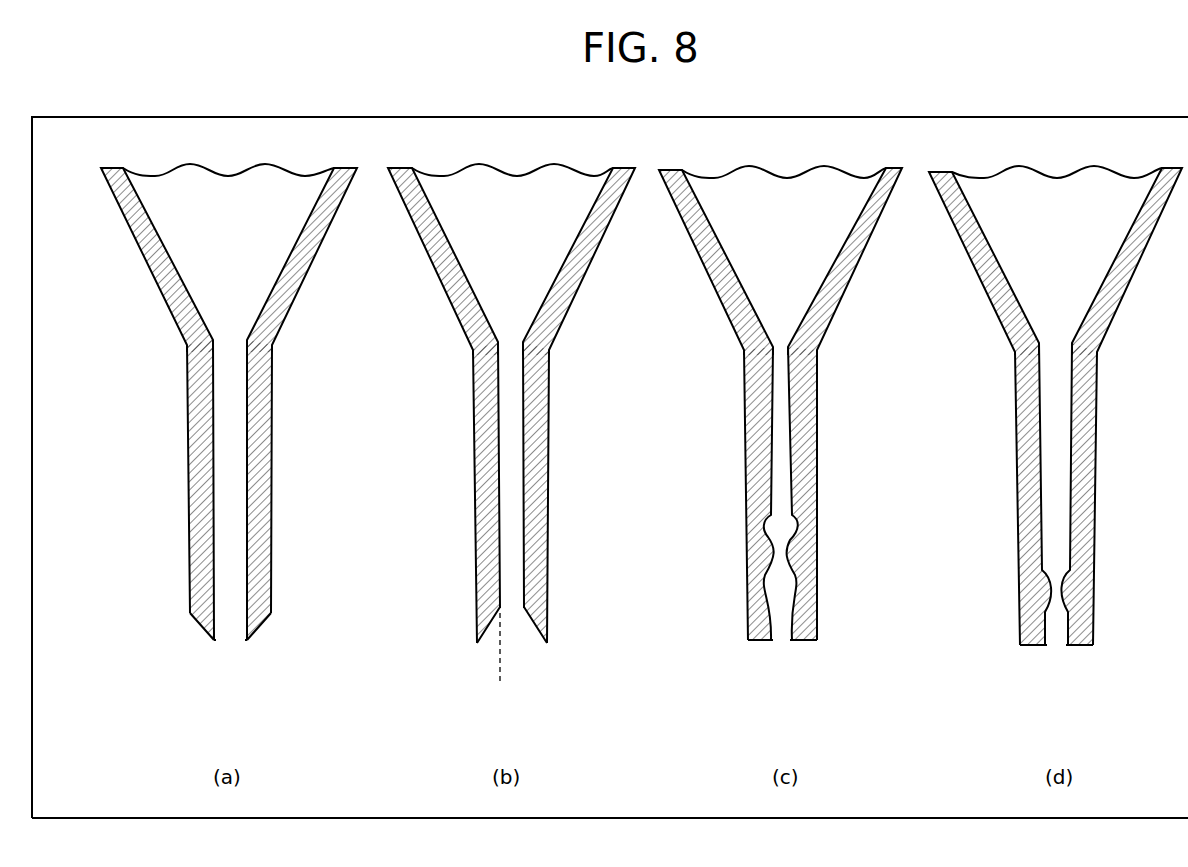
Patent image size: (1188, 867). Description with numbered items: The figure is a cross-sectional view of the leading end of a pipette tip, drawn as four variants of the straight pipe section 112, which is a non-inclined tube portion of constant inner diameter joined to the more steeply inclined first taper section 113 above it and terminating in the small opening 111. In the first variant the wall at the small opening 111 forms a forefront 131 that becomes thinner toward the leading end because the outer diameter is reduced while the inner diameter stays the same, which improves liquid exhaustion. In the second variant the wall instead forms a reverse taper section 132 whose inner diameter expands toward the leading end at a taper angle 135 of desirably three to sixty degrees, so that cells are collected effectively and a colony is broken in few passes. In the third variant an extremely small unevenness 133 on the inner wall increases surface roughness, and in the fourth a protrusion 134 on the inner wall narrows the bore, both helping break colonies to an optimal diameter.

The small opening 111 is at (229, 629).
The straight pipe section 112 is at (172, 552).
The first taper section 113 is at (150, 270).
The forefront 131 is at (258, 620).
The reverse taper section 132 is at (543, 617).
The unevenness 133 is at (792, 587).
The protrusion 134 is at (1067, 593).
The taper angle 135 is at (493, 641).